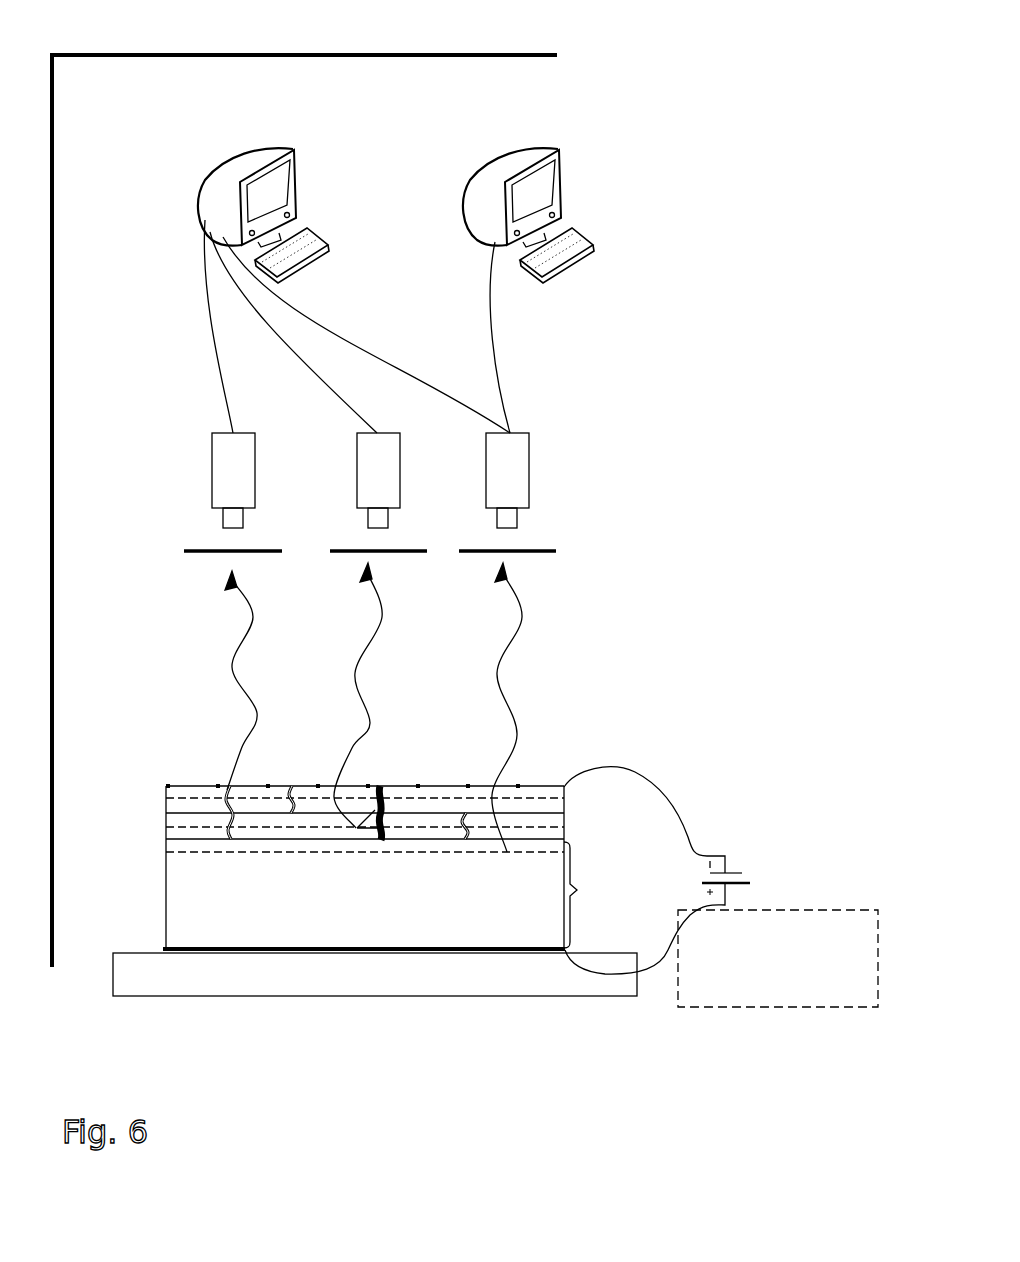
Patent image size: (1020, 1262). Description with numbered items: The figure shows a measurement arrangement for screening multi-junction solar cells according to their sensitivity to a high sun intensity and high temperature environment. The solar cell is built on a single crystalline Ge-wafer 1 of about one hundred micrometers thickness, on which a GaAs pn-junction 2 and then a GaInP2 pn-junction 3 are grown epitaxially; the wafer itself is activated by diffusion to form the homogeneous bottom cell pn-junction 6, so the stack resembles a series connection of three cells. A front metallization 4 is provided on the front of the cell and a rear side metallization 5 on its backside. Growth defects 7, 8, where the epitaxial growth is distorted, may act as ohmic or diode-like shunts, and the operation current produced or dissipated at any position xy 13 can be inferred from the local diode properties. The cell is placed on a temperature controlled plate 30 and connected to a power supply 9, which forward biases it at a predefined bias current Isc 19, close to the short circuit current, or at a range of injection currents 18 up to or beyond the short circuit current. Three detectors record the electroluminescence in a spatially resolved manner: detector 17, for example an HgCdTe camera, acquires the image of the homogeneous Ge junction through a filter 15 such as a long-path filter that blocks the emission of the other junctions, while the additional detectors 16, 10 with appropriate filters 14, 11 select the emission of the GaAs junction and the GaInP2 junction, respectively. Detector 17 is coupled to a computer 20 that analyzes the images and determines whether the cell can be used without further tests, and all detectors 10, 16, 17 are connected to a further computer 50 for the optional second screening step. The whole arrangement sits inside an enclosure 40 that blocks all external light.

The enclosure 40 is at (483, 55).
The further computer 50 is at (297, 179).
The computer 20 is at (595, 240).
The detector 16 is at (233, 443).
The detector 10 is at (387, 450).
The detector 17 is at (508, 448).
The filter 14 is at (268, 548).
The filter 11 is at (400, 548).
The filter 15 is at (547, 548).
The growth defect 7 is at (222, 787).
The growth defect 8 is at (382, 786).
The position xy 13 is at (385, 797).
The front metallization 4 is at (522, 786).
The GaInP2 pn-junction 3 is at (166, 797).
The GaAs pn-junction 2 is at (166, 826).
The bottom cell pn-junction 6 is at (166, 851).
The Ge-wafer 1 is at (382, 867).
The rear side metallization 5 is at (425, 952).
The temperature controlled plate 30 is at (350, 975).
The bias current Isc 19 is at (713, 758).
The power supply 9 is at (733, 867).
The injection currents I1, I2, ..., IN 18 is at (822, 962).